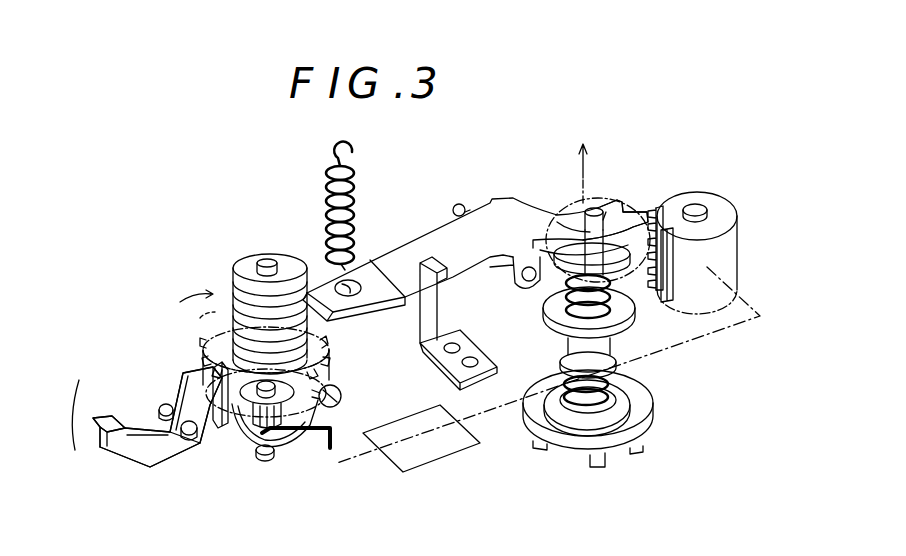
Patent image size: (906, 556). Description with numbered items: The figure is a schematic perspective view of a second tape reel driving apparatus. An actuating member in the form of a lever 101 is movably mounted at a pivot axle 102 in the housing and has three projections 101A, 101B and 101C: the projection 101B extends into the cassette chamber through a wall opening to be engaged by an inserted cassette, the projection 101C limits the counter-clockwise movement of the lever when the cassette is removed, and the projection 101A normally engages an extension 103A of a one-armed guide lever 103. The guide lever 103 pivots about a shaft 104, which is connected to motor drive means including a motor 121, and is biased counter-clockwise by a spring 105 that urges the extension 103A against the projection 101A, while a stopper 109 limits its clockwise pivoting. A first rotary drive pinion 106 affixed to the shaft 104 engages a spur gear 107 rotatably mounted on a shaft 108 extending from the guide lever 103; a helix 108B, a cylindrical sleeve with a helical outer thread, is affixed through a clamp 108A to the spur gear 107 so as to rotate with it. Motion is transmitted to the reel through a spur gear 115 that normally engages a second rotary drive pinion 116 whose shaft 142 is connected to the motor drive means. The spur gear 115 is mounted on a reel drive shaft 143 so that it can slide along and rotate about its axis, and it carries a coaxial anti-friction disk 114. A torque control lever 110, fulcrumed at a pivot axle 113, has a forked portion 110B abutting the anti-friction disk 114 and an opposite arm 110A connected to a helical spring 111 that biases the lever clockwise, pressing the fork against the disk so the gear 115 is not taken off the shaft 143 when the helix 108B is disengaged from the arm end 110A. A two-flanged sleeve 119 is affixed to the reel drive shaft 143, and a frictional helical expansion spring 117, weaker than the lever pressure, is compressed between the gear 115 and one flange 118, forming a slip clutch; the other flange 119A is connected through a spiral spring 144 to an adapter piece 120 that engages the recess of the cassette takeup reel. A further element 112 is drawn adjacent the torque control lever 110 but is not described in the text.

The lever 101 is at (140, 430).
The projection 101A is at (190, 393).
The projection 101B is at (133, 457).
The projection 101C is at (97, 428).
The pivot axle 102 is at (190, 446).
The one-armed guide lever 103 is at (290, 448).
The extension 103A is at (226, 420).
The shaft 104 is at (268, 458).
The spring 105 is at (306, 440).
The first rotary drive pinion 106 is at (263, 447).
The spur gear 107 is at (218, 332).
The shaft 108 is at (252, 263).
The clamp 108A is at (323, 354).
The helix 108B is at (248, 300).
The stopper 109 is at (341, 397).
The torque control lever 110 is at (395, 262).
The arm 110A is at (322, 312).
The forked portion 110B is at (614, 205).
The helical spring 111 is at (326, 212).
The tab 112 is at (443, 314).
The pivot axle 113 is at (461, 204).
The anti-friction disk 114 is at (668, 304).
The spur gear 115 is at (664, 290).
The second rotary drive pinion 116 is at (708, 197).
The frictional helical expansion spring 117 is at (613, 300).
The flange 118 is at (560, 317).
The two-flanged sleeve 119 is at (617, 397).
The flange 119A is at (528, 370).
The adapter piece 120 is at (568, 430).
The motor 121 is at (447, 447).
The shaft 142 is at (693, 204).
The reel drive shaft 143 is at (586, 210).
The spiral spring 144 is at (617, 407).